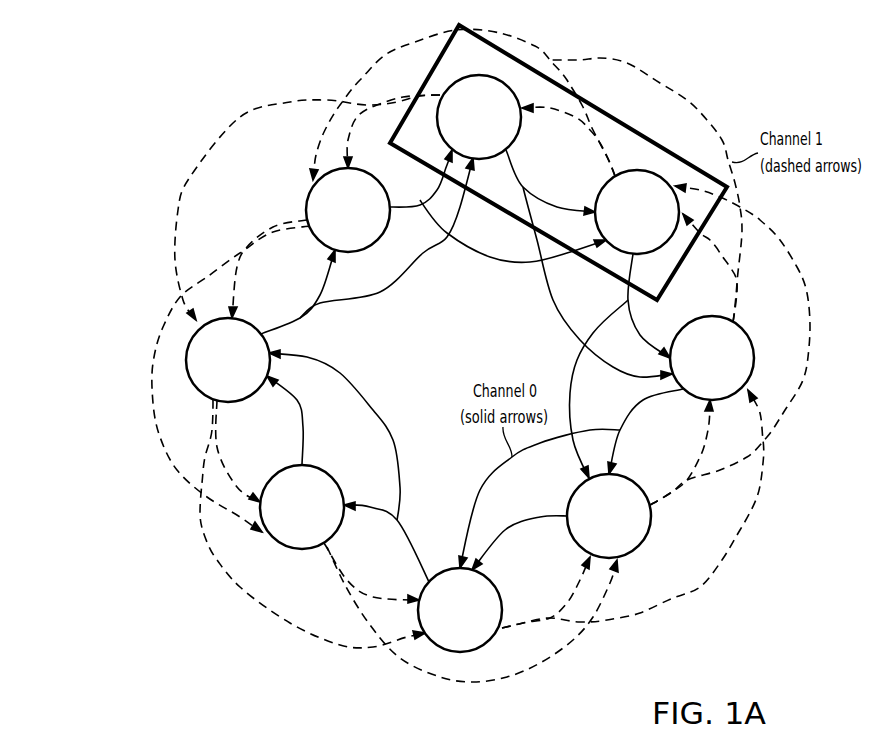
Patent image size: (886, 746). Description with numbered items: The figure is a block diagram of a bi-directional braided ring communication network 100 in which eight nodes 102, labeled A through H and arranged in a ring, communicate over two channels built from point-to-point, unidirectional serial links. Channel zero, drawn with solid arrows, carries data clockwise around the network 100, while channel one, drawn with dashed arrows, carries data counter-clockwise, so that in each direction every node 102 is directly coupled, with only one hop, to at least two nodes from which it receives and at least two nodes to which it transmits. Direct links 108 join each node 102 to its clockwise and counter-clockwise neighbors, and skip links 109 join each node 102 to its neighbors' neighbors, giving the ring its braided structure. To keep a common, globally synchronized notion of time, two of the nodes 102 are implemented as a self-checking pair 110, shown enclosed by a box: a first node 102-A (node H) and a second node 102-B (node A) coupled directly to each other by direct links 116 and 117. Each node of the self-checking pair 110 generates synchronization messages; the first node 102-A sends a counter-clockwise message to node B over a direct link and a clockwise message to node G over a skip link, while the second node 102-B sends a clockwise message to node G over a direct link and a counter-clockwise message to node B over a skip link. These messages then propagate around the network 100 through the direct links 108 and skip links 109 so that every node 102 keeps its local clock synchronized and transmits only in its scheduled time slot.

The bi-directional braided ring communication network 100 is at (138, 163).
The node 102 is at (479, 633).
The first node 102-A is at (607, 233).
The second node 102-B is at (449, 138).
The direct link 108 is at (557, 157).
The skip link 109 is at (221, 140).
The self-checking pair 110 is at (665, 148).
The direct link 116 is at (580, 127).
The direct link 117 is at (557, 200).